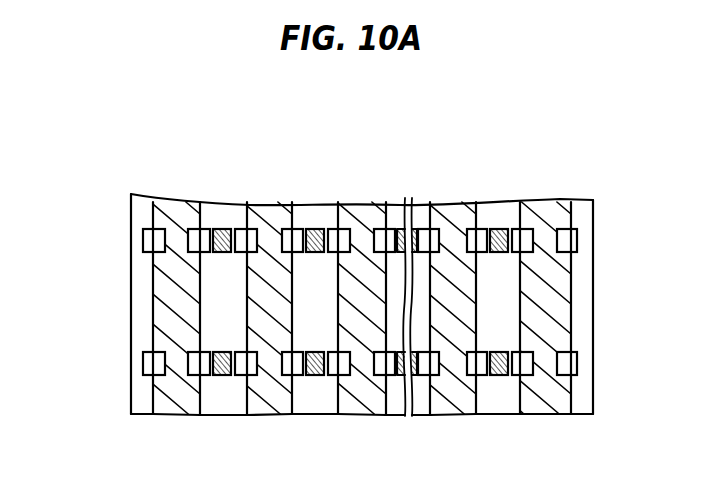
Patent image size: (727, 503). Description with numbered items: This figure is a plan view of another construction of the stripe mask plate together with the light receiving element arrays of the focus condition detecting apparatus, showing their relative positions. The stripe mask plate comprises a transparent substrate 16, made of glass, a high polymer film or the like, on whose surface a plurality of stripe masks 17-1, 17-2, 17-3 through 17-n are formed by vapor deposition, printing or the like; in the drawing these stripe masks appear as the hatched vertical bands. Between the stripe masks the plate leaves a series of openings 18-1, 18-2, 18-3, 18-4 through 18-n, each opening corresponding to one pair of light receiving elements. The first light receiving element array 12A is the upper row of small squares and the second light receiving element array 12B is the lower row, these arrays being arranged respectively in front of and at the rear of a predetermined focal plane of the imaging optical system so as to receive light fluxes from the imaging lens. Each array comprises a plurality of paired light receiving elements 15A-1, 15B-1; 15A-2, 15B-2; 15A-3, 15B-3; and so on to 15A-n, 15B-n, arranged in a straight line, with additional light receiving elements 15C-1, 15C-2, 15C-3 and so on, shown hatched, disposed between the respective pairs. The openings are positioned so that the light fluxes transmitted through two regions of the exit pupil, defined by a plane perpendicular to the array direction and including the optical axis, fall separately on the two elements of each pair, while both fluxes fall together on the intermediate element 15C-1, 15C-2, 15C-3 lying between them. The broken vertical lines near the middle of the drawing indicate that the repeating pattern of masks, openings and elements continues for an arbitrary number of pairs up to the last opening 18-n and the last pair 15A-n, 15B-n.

The transparent substrate 16 is at (135, 310).
The stripe mask 17-1 is at (173, 412).
The stripe mask 17-2 is at (267, 413).
The stripe mask 17-3 is at (345, 413).
The stripe mask 17-n is at (550, 413).
The opening 18-1 is at (137, 412).
The opening 18-2 is at (220, 413).
The opening 18-3 is at (313, 413).
The opening 18-4 is at (392, 413).
The opening 18-n is at (585, 400).
The light receiving element 15A-1 is at (143, 238).
The light receiving element 15A-2 is at (238, 229).
The light receiving element 15A-3 is at (331, 229).
The light receiving element 15A-n is at (520, 229).
The light receiving element 15B-1 is at (204, 229).
The light receiving element 15B-2 is at (298, 229).
The light receiving element 15B-3 is at (390, 229).
The light receiving element 15B-n is at (578, 248).
The light receiving element 15C-1 is at (220, 229).
The light receiving element 15C-2 is at (314, 229).
The light receiving element 15C-3 is at (401, 229).
The first light receiving element array 12A is at (613, 241).
The second light receiving element array 12B is at (581, 362).